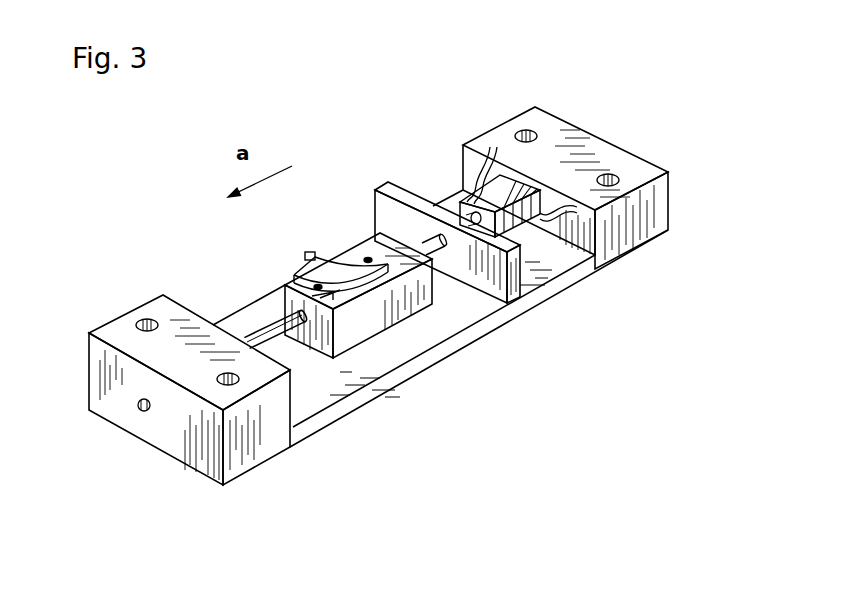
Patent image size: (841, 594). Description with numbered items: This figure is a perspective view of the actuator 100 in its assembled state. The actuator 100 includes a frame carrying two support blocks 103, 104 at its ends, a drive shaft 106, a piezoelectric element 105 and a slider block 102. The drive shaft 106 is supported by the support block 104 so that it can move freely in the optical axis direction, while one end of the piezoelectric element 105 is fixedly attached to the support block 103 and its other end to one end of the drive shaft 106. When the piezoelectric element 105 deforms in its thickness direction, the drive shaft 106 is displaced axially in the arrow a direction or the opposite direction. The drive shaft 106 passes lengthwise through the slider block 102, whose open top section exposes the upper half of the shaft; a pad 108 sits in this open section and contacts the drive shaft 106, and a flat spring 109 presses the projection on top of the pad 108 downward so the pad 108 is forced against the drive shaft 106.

The actuator 100 is at (550, 328).
The slider block 102 is at (418, 300).
The support block 103 is at (636, 243).
The support block 104 is at (262, 437).
The piezoelectric element 105 is at (473, 187).
The drive shaft 106 is at (266, 333).
The pad 108 is at (338, 342).
The flat spring 109 is at (335, 268).